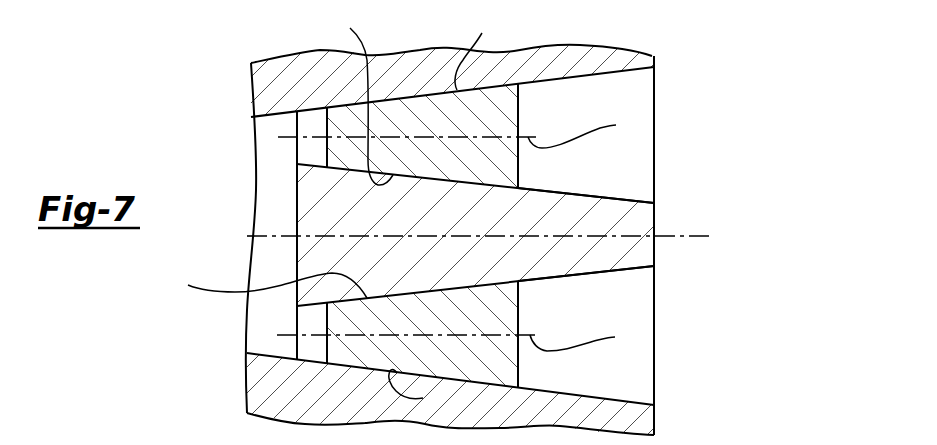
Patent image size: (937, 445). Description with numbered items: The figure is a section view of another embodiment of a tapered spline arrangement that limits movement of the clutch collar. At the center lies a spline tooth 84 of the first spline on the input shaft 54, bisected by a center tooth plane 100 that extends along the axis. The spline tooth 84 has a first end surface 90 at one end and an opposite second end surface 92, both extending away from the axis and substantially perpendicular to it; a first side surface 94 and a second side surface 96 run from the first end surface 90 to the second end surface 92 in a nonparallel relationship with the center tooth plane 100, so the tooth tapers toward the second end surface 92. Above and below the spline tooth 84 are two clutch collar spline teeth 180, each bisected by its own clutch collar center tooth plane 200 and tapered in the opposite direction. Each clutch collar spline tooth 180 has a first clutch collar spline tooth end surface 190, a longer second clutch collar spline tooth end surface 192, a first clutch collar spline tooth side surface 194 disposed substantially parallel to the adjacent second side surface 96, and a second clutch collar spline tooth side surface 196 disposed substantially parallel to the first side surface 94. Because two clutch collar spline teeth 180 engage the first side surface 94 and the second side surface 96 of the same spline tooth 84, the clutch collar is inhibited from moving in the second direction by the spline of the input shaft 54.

The input shaft 54 is at (528, 407).
The spline tooth 84 is at (560, 67).
The first end surface 90 is at (295, 255).
The second end surface 92 is at (655, 217).
The first side surface 94 is at (597, 197).
The second side surface 96 is at (602, 270).
The center tooth plane 100 is at (262, 236).
The clutch collar spline tooth 180 is at (428, 129).
The first clutch collar spline tooth end surface 190 is at (322, 130).
The second clutch collar spline tooth end surface 192 is at (518, 118).
The first clutch collar spline tooth side surface 194 is at (325, 155).
The second clutch collar spline tooth side surface 196 is at (390, 210).
The clutch collar center tooth plane 200 is at (585, 233).